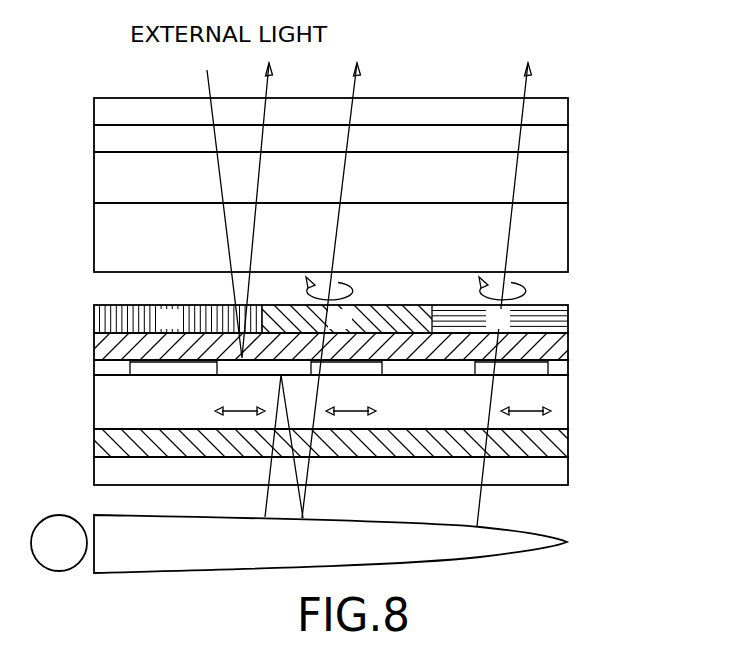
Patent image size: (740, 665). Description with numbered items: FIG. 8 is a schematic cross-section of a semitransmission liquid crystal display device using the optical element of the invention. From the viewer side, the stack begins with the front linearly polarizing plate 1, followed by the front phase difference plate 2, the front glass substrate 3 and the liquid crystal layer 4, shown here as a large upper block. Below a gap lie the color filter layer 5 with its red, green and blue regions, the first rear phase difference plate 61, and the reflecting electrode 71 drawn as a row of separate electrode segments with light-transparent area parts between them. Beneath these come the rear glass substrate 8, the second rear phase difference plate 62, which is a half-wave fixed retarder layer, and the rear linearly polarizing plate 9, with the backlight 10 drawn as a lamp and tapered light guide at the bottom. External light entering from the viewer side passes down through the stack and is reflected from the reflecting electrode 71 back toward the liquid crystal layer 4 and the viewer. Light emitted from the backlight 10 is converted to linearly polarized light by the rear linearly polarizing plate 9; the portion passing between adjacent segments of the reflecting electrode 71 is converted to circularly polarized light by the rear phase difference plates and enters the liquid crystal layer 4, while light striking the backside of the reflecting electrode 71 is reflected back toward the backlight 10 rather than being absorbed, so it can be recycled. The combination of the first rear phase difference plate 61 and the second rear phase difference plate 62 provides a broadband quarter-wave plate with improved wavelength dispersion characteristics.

The front linearly polarizing plate 1 is at (570, 113).
The front phase difference plate 2 is at (570, 142).
The front glass substrate 3 is at (570, 178).
The liquid crystal layer 4 is at (570, 237).
The color filter layer 5 is at (570, 316).
The first rear phase difference plate 61 is at (570, 339).
The reflecting electrode 71 is at (570, 363).
The rear glass substrate 8 is at (570, 393).
The second rear phase difference plate 62 is at (570, 438).
The rear linearly polarizing plate 9 is at (570, 472).
The backlight 10 is at (569, 542).